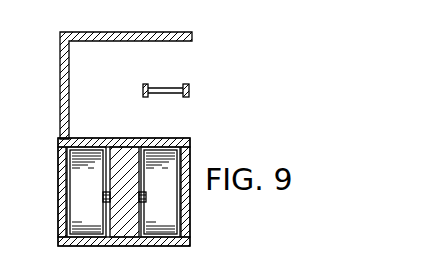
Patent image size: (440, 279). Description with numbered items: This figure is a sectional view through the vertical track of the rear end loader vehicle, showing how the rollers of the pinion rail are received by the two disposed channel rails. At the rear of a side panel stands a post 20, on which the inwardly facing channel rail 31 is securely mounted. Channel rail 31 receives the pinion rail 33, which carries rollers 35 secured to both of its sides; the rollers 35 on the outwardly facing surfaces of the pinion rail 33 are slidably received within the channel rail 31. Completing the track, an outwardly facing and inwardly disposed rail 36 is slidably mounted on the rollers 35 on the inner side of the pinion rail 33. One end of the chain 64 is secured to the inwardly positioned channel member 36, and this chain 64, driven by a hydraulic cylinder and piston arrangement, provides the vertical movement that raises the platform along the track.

The post 20 is at (69, 78).
The channel rail 31 is at (62, 176).
The pinion rail 33 is at (128, 138).
The rollers 35 is at (80, 198).
The inwardly disposed rail 36 is at (198, 143).
The chain 64 is at (167, 91).